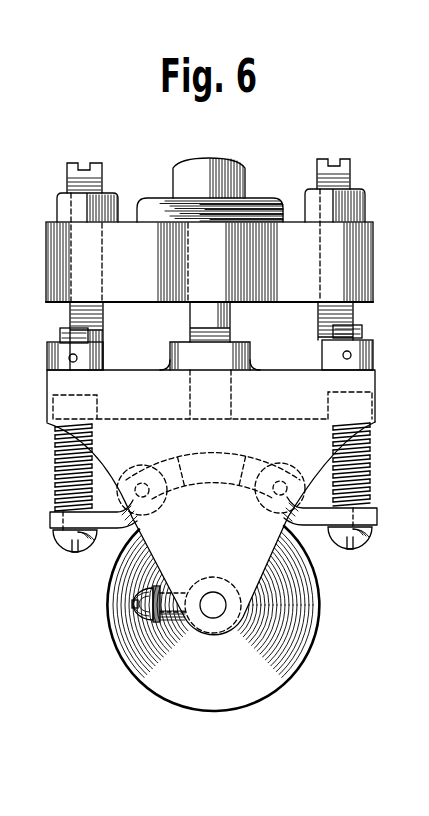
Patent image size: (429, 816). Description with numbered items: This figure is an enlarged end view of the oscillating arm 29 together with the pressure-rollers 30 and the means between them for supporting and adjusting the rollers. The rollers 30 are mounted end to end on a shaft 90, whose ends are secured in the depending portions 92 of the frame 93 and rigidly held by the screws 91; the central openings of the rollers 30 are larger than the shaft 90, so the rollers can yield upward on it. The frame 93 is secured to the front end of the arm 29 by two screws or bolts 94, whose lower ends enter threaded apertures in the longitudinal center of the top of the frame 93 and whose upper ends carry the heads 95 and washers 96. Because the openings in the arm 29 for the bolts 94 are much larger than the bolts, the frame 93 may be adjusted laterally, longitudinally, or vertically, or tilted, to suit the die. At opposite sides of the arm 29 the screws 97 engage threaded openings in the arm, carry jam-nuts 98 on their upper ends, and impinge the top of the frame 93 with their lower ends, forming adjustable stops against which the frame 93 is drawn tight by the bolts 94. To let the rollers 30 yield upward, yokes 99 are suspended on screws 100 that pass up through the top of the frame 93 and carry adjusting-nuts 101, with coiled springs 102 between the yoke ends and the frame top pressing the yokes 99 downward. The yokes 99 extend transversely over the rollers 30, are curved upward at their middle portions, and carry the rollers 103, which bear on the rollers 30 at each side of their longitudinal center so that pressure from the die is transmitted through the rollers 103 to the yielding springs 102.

The oscillating arm 29 is at (381, 265).
The rollers 30 is at (320, 628).
The shaft 90 is at (211, 612).
The screws 91 is at (131, 608).
The depending portions 92 is at (211, 528).
The frame 93 is at (211, 396).
The screws or bolts 94 is at (232, 320).
The heads 95 is at (176, 170).
The washers 96 is at (260, 199).
The screws 97 is at (84, 164).
The nuts 98 is at (56, 208).
The yokes 99 is at (49, 521).
The screws 100 is at (60, 330).
The adjusting-nuts 101 is at (46, 356).
The coiled springs 102 is at (55, 470).
The rollers 103 is at (155, 460).